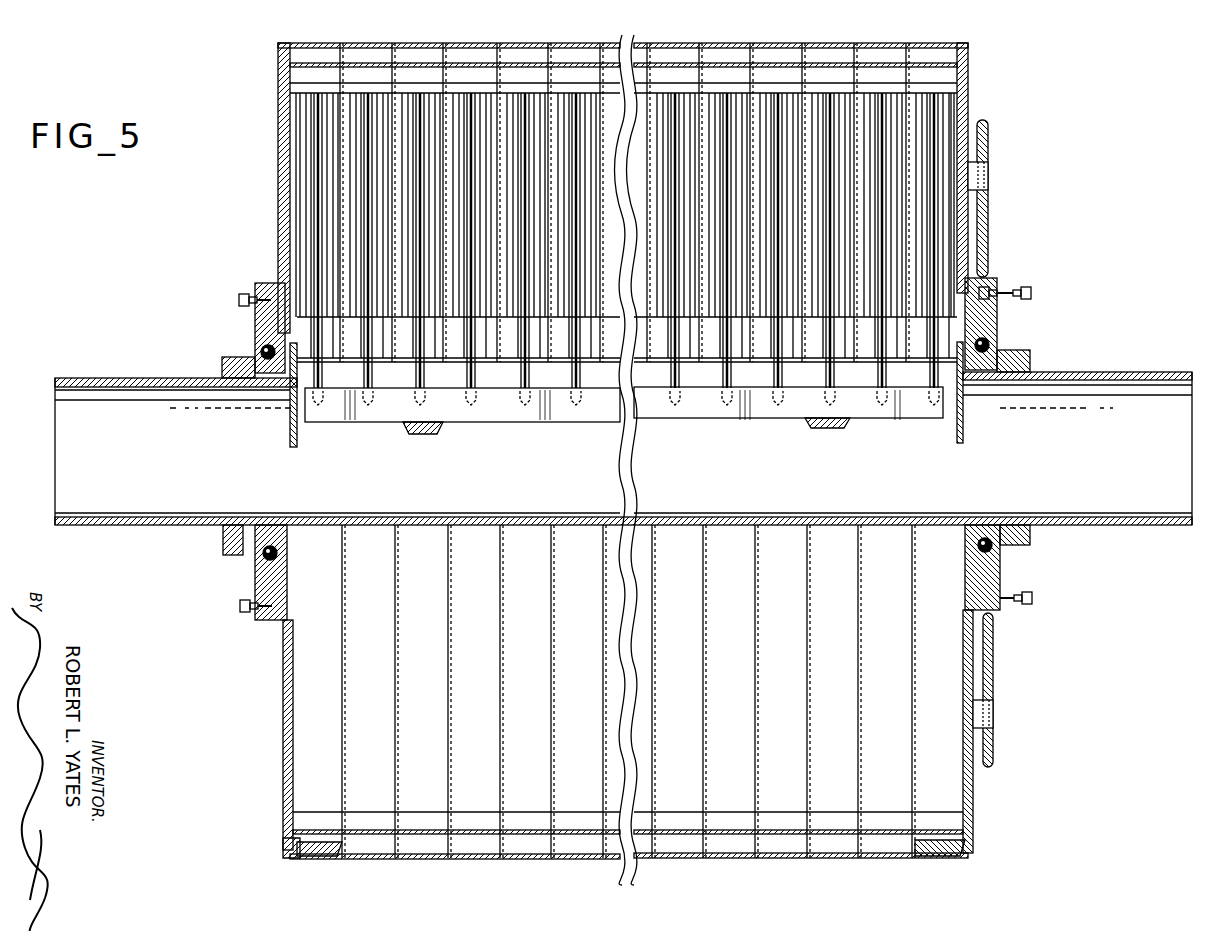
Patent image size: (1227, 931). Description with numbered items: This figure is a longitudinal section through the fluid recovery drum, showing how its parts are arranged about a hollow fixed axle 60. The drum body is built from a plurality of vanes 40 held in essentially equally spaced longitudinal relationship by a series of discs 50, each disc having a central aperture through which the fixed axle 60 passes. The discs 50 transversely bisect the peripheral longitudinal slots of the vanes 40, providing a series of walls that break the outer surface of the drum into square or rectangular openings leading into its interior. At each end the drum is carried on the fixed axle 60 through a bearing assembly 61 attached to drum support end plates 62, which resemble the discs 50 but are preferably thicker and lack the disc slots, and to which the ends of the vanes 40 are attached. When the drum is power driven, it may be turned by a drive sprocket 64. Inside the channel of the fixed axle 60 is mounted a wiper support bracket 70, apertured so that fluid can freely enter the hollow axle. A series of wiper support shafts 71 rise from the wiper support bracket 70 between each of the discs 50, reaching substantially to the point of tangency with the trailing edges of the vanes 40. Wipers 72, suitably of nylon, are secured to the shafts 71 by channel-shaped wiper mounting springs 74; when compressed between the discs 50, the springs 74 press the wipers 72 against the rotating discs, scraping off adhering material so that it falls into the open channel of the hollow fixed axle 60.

The vanes 40 is at (360, 62).
The discs 50 is at (504, 82).
The fixed axle 60 is at (150, 376).
The bearing assembly 61 is at (243, 559).
The drum support end plates 62 is at (286, 662).
The drive sprocket 64 is at (982, 222).
The wiper support bracket 70 is at (820, 427).
The wiper support shafts 71 is at (411, 370).
The wipers 72 is at (335, 237).
The wiper mounting springs 74 is at (300, 186).